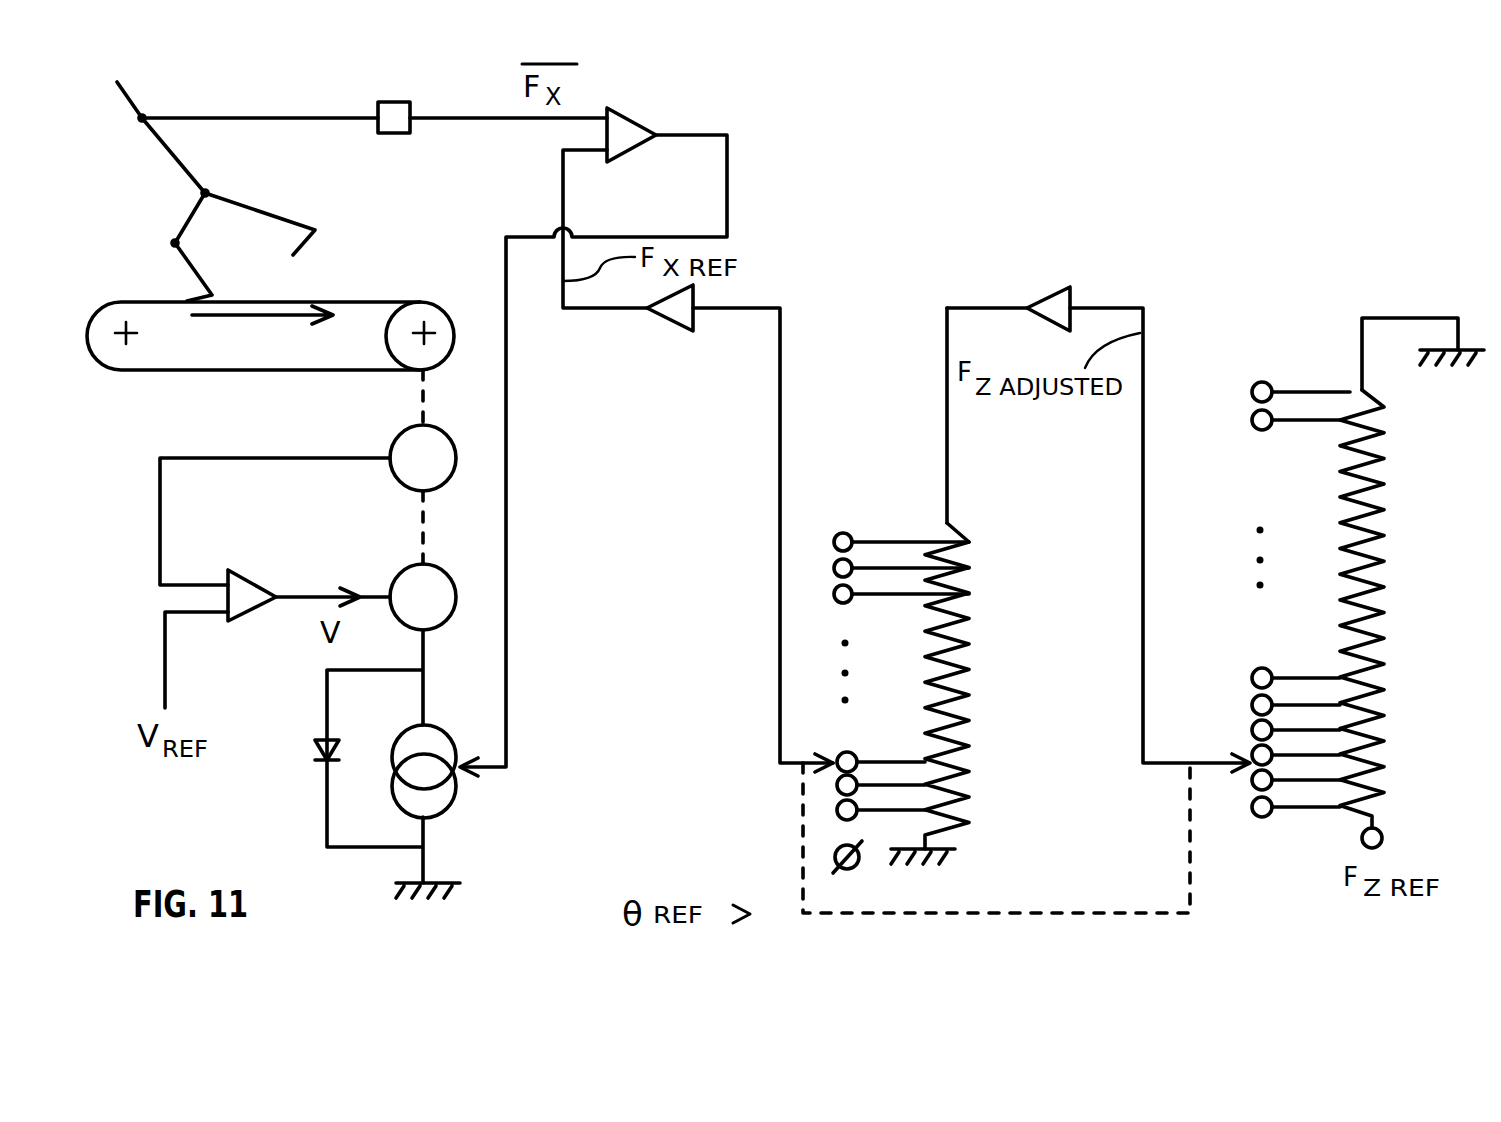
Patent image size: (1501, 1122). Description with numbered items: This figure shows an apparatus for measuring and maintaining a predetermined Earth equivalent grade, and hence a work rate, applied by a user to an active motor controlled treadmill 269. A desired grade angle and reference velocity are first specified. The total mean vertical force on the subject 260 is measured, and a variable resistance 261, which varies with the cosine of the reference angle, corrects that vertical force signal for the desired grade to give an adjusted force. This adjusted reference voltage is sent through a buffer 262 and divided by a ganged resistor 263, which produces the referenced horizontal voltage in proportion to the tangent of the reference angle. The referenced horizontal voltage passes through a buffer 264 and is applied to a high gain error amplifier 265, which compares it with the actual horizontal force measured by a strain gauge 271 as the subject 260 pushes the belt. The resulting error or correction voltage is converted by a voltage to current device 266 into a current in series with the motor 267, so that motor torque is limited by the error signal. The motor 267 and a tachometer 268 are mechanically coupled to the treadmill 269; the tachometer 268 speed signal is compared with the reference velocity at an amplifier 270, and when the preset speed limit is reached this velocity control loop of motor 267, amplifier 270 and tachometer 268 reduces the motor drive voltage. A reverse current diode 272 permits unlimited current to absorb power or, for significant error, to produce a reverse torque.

The subject 260 is at (128, 103).
The strain gauge 271 is at (412, 112).
The high gain error amplifier 265 is at (648, 124).
The treadmill 269 is at (440, 308).
The buffer 264 is at (668, 331).
The buffer 262 is at (1033, 300).
The ganged resistor 263 is at (966, 645).
The variable resistance 261 is at (1375, 622).
The tachometer 268 is at (423, 458).
The motor 267 is at (423, 597).
The amplifier 270 is at (290, 565).
The reverse current diode 272 is at (313, 748).
The voltage to current device 266 is at (480, 807).